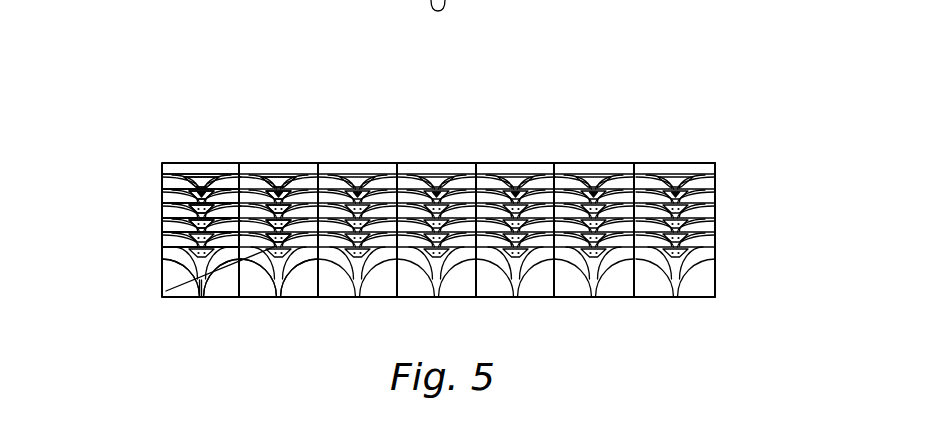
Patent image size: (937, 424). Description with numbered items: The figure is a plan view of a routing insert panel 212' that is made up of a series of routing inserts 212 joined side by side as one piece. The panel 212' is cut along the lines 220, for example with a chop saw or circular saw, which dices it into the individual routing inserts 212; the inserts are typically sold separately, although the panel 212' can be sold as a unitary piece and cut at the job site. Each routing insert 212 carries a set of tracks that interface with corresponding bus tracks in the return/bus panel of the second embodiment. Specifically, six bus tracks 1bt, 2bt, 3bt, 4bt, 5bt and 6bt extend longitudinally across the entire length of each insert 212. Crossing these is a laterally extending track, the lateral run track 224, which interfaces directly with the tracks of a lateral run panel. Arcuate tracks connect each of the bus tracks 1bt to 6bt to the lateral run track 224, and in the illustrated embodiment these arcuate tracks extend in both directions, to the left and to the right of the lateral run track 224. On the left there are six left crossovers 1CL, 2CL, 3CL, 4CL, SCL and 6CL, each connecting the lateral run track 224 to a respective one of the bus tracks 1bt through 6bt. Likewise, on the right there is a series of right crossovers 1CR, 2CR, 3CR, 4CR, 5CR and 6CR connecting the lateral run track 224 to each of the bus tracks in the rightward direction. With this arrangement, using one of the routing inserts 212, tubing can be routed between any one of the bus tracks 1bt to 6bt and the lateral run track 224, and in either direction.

The routing insert 212 is at (459, 195).
The routing insert panel 212' is at (776, 230).
The cutting lines 220 is at (242, 153).
The lateral run track 224 is at (204, 288).
The first bus track 1bt is at (161, 180).
The second bus track 2bt is at (161, 193).
The third bus track 3bt is at (161, 210).
The fourth bus track 4bt is at (161, 228).
The fifth bus track 5bt is at (161, 240).
The sixth bus track 6bt is at (161, 256).
The fifth left crossover SCL is at (168, 248).
The first left crossover 1CL is at (196, 178).
The second left crossover 2CL is at (199, 192).
The third left crossover 3CL is at (201, 206).
The fourth left crossover 4CL is at (203, 221).
The sixth left crossover 6CL is at (197, 250).
The first right crossover 1CR is at (275, 178).
The second right crossover 2CR is at (274, 192).
The third right crossover 3CR is at (284, 213).
The fourth right crossover 4CR is at (281, 228).
The fifth right crossover 5CR is at (279, 242).
The sixth right crossover 6CR is at (279, 252).